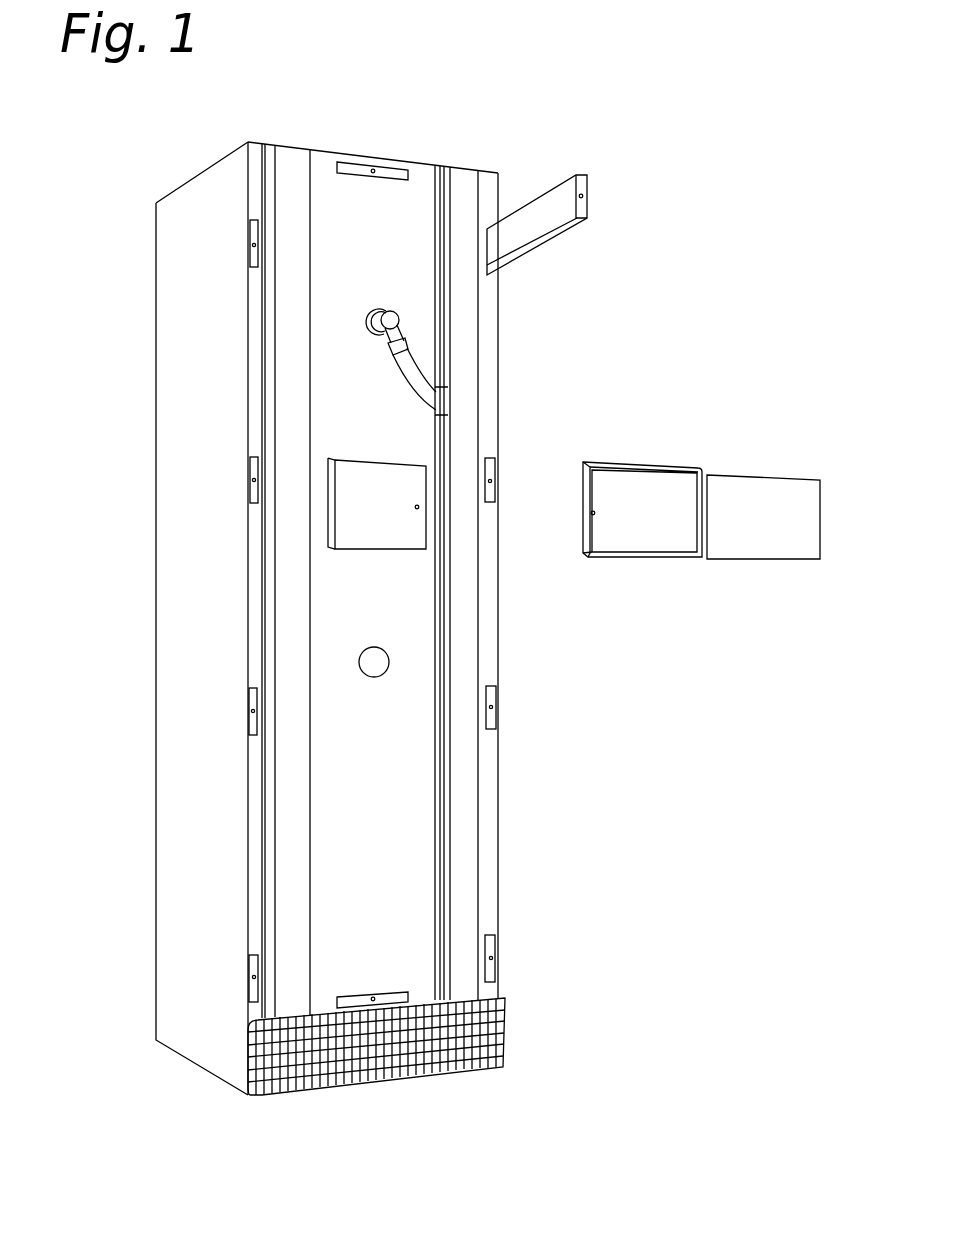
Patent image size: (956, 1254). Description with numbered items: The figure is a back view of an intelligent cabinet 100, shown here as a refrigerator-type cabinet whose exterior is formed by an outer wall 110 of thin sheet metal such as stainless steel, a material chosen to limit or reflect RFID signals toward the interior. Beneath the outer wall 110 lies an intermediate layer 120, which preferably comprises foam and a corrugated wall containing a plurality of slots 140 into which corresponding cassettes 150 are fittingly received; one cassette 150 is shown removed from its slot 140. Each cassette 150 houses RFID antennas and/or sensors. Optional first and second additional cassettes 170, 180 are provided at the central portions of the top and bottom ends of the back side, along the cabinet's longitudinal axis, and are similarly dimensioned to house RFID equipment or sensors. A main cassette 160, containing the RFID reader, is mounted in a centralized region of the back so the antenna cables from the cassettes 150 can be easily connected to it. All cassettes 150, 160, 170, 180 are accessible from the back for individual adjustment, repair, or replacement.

The intelligent cabinet 100 is at (492, 113).
The outer wall 110 is at (512, 407).
The intermediate layer 120 is at (251, 412).
The slots 140 is at (492, 257).
The cassettes 150 is at (582, 187).
The main cassette 160 is at (397, 535).
The first additional cassette 170 is at (355, 168).
The second additional cassette 180 is at (400, 997).